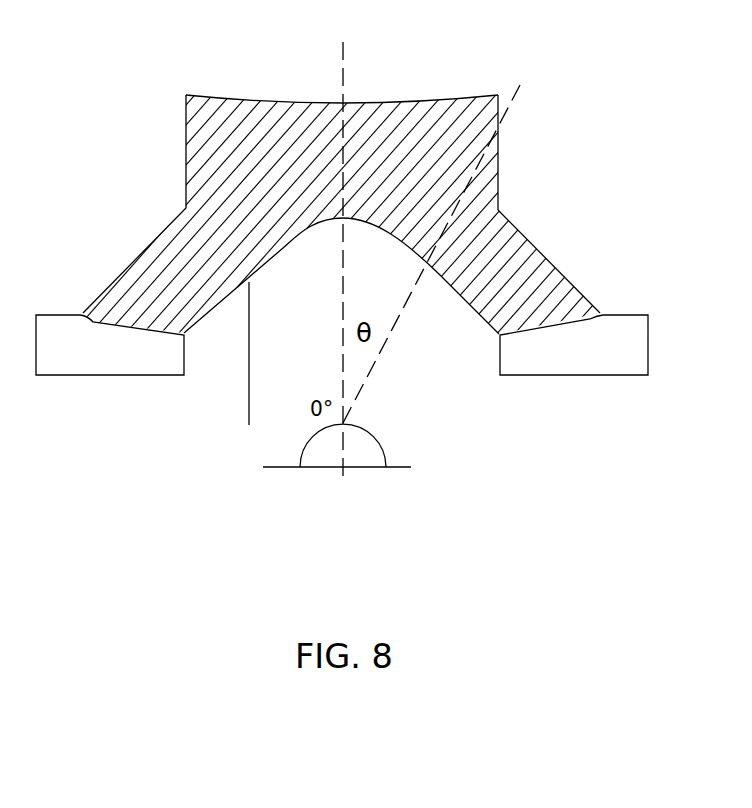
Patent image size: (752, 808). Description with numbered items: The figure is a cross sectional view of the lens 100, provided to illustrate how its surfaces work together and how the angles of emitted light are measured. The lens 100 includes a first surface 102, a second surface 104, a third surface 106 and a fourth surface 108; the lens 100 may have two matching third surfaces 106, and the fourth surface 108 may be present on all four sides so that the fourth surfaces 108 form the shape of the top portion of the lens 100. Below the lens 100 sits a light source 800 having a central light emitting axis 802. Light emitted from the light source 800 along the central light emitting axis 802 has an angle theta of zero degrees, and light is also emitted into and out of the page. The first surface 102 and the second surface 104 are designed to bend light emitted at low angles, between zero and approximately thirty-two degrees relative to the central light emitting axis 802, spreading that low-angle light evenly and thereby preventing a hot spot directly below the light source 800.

The lens 100 is at (376, 192).
The first surface 102 is at (231, 371).
The second surface 104 is at (298, 103).
The third surface 106 is at (545, 262).
The fourth surface 108 is at (498, 170).
The light source 800 is at (375, 438).
The central light emitting axis 802 is at (343, 283).